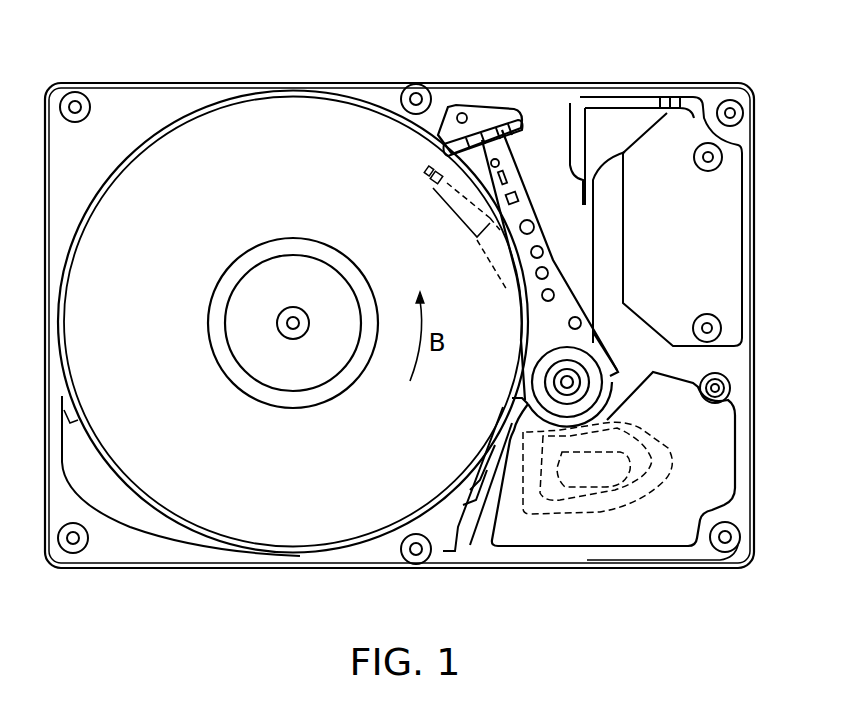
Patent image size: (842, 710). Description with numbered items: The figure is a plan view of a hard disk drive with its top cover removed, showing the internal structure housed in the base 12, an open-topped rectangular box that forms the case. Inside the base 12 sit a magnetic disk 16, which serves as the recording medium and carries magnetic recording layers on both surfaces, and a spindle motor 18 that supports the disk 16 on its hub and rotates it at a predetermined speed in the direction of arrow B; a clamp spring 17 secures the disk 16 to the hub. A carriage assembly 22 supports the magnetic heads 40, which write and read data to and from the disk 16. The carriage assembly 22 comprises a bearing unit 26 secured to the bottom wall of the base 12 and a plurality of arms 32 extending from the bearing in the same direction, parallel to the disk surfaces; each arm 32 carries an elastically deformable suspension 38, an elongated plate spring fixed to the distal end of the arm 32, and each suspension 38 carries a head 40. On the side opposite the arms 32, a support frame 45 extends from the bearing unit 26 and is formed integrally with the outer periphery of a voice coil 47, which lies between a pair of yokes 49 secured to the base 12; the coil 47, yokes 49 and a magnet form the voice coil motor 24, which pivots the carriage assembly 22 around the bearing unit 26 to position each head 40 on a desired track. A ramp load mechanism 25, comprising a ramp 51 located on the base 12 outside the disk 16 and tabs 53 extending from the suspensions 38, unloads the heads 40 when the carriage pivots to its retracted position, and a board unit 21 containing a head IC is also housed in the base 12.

The base 12 is at (122, 96).
The magnetic disk 16 is at (285, 102).
The clamp spring 17 is at (288, 380).
The spindle motor 18 is at (204, 333).
The board unit 21 is at (668, 138).
The carriage assembly 22 is at (560, 227).
The voice coil motor 24 is at (514, 465).
The ramp load mechanism 25 is at (462, 100).
The bearing unit 26 is at (540, 386).
The arm 32 is at (567, 312).
The suspension 38 is at (516, 178).
The magnetic head 40 is at (430, 190).
The support frame 45 is at (660, 448).
The voice coil 47 is at (577, 493).
The yoke 49 is at (720, 440).
The ramp 51 is at (503, 110).
The tab 53 is at (430, 172).